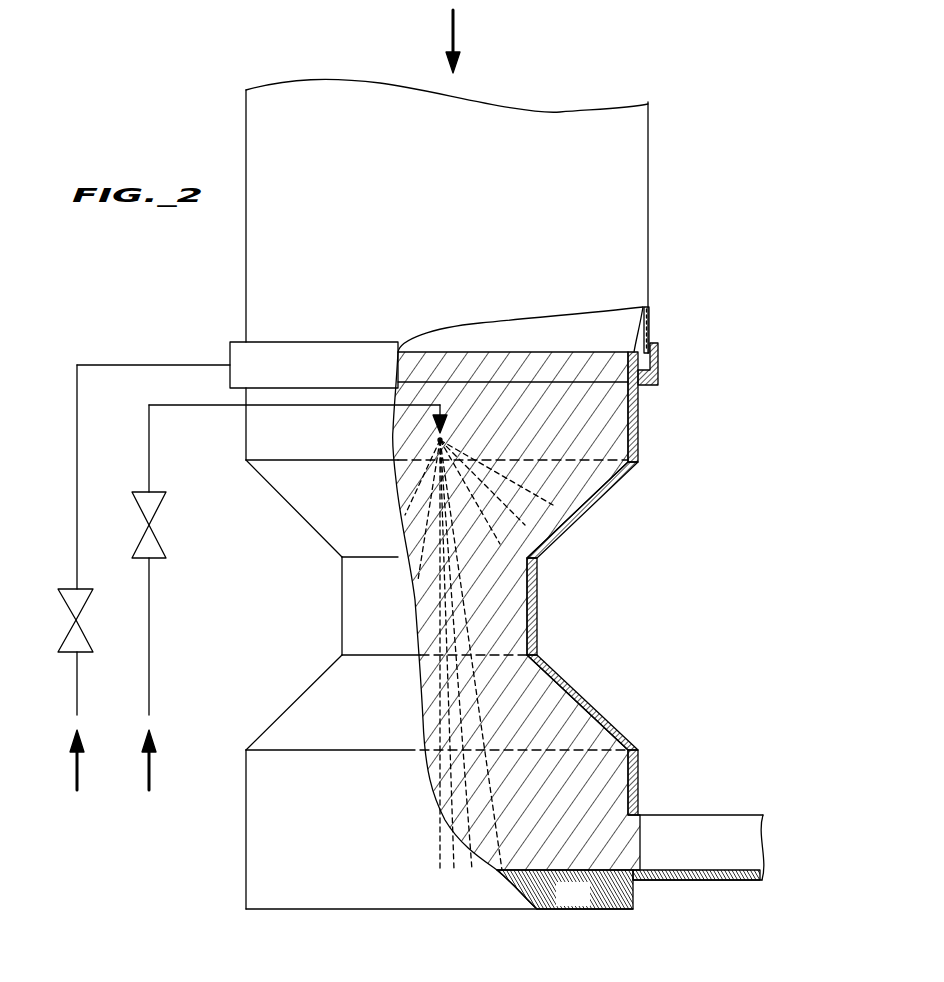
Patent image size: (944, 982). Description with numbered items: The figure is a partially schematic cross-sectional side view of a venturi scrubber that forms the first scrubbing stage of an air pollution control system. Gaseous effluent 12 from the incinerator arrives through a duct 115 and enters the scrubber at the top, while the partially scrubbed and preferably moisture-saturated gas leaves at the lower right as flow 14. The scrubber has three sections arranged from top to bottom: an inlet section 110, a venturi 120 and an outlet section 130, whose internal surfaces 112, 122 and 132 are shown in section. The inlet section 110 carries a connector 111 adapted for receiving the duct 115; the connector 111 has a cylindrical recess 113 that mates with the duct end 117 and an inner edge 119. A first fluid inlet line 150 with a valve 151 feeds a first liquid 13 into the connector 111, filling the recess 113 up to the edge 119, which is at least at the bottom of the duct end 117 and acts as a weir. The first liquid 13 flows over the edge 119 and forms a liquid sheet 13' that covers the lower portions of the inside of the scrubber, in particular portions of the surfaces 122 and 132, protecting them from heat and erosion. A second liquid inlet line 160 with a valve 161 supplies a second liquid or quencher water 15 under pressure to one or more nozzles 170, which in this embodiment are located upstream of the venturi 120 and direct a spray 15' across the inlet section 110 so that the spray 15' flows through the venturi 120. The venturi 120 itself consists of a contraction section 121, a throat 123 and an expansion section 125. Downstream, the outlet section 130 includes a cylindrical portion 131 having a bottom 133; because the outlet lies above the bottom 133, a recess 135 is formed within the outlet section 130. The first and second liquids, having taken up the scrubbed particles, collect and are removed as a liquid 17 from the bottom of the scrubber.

The gaseous effluent 12 is at (455, 28).
The first liquid 13 is at (104, 767).
The liquid sheet 13' is at (576, 630).
The flow 14 is at (836, 843).
The second liquid 15 is at (177, 767).
The spray 15' is at (583, 544).
The liquid 17 is at (587, 905).
The inlet section 110 is at (742, 340).
The connector 111 is at (657, 366).
The internal surface 112 is at (614, 346).
The cylindrical recess 113 is at (644, 385).
The duct 115 is at (650, 320).
The duct end 117 is at (652, 345).
The inner edge 119 is at (641, 305).
The venturi 120 is at (710, 610).
The contraction section 121 is at (578, 548).
The internal surface 122 is at (639, 429).
The throat 123 is at (538, 635).
The expansion section 125 is at (613, 722).
The outlet section 130 is at (188, 898).
The cylindrical portion 131 is at (246, 870).
The internal surface 132 is at (638, 770).
The bottom 133 is at (372, 911).
The recess 135 is at (635, 890).
The first fluid inlet line 150 is at (77, 677).
The valve 151 is at (80, 615).
The second liquid inlet line 160 is at (150, 593).
The valve 161 is at (162, 510).
The nozzles 170 is at (448, 420).